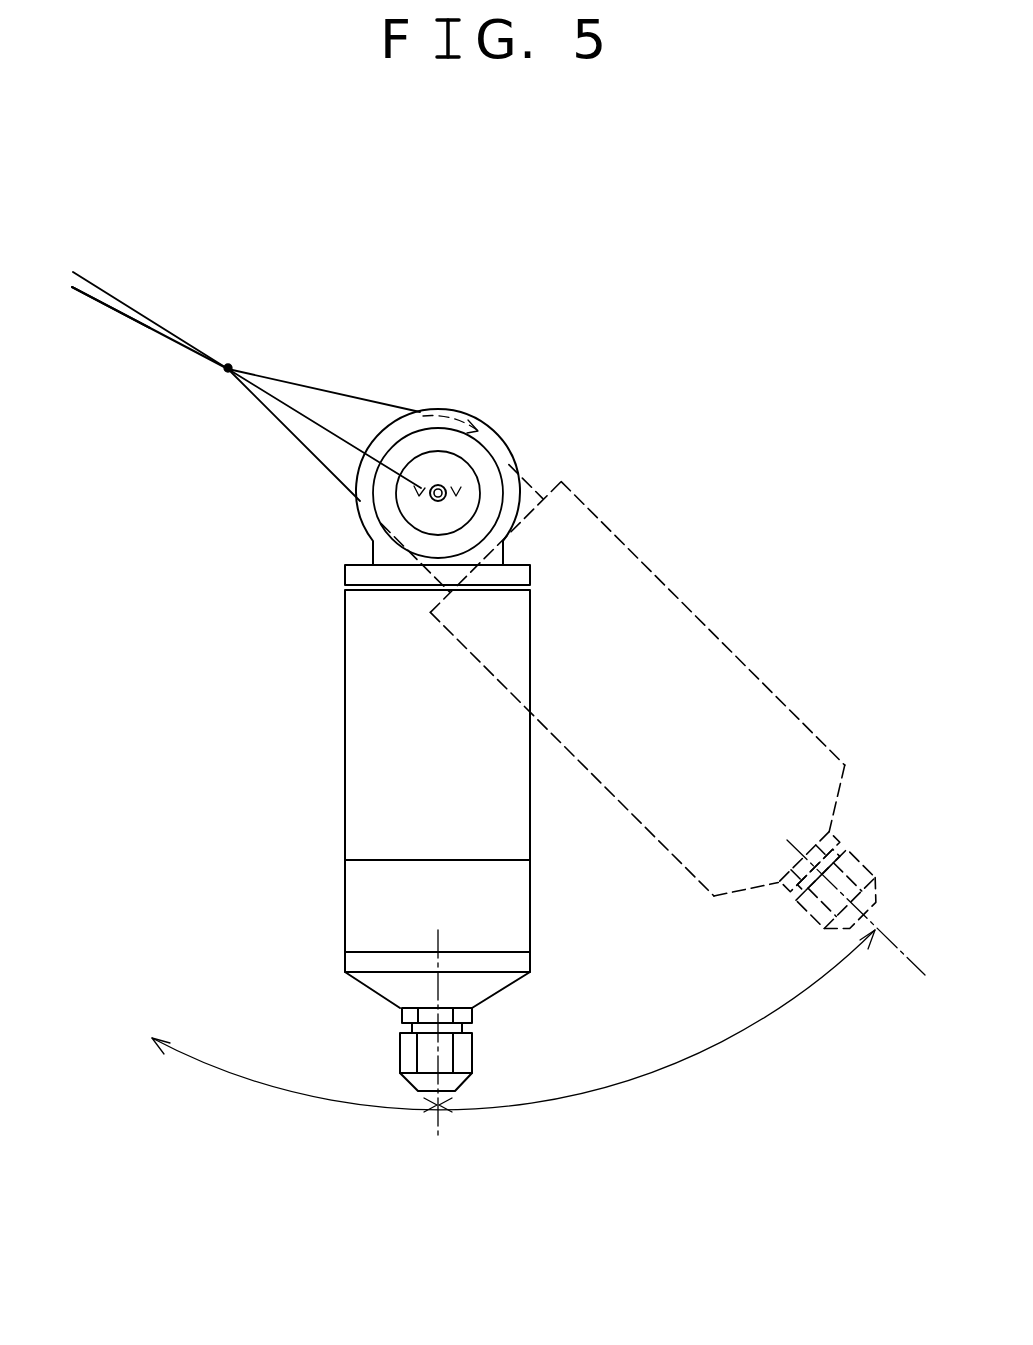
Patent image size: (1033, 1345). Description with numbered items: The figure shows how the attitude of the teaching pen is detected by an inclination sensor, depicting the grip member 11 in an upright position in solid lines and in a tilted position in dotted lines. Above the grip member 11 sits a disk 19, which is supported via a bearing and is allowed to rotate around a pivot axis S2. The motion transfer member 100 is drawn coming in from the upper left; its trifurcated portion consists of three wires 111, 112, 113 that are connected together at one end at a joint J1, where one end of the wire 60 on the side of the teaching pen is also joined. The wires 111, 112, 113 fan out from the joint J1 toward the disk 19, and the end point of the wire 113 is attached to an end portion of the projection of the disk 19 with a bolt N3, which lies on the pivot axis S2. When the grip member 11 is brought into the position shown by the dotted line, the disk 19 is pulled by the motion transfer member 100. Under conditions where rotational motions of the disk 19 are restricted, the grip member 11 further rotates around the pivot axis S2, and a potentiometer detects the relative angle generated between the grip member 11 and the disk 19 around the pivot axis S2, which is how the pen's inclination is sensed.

The motion transfer member 100 is at (140, 313).
The wire 60 is at (127, 320).
The joint J1 is at (232, 366).
The wire 113 is at (327, 422).
The wire 111 is at (373, 402).
The wire 112 is at (328, 478).
The disk 19 is at (496, 442).
The pivot axis S2 is at (436, 475).
The bolt N3 is at (456, 489).
The grip member 11 is at (345, 722).